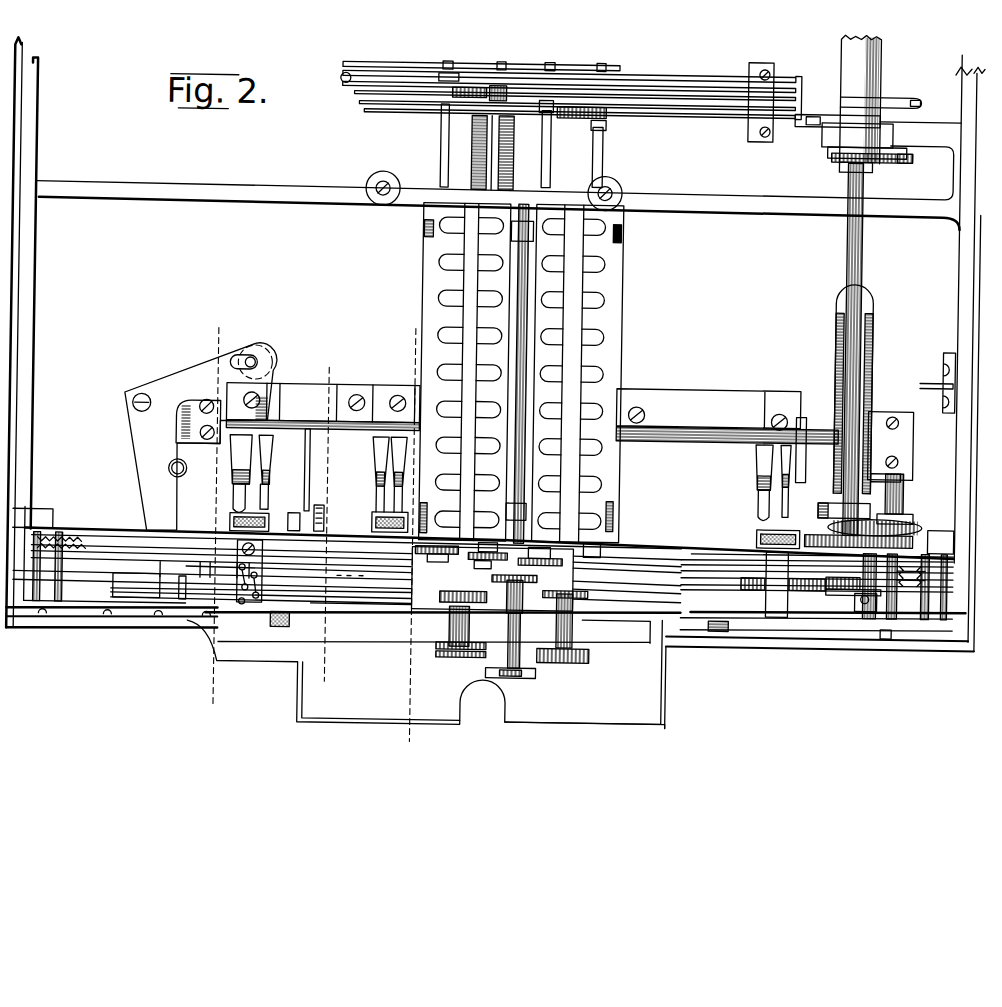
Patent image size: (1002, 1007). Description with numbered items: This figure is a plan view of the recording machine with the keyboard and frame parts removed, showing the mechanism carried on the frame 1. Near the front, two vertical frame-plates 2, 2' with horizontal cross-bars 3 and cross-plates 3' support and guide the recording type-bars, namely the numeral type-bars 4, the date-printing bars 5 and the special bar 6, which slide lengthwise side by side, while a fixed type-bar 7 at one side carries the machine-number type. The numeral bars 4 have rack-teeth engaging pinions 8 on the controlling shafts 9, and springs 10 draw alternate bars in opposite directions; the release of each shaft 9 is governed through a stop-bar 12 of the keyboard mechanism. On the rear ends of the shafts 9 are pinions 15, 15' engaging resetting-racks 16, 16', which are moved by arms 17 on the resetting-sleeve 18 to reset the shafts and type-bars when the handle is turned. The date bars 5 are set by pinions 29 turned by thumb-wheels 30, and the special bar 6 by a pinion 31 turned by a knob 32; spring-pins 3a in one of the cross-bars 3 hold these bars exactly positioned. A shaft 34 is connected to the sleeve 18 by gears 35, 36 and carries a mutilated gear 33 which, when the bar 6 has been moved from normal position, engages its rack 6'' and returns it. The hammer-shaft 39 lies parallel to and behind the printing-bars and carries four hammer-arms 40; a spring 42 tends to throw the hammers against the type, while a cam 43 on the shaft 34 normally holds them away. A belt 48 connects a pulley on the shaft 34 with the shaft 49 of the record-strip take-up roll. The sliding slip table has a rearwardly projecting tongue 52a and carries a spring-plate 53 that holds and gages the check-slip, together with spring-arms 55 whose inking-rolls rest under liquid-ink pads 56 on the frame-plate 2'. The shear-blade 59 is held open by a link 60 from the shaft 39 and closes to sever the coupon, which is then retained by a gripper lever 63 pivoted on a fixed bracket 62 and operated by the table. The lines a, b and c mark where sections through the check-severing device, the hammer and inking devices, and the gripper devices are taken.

The frame 1 is at (495, 385).
The frame-plate 2 is at (486, 592).
The frame-plate 2' is at (822, 537).
The cross-bars 3 is at (503, 605).
The cross-plates 3' is at (400, 633).
The snap-detents or spring-pins 3a is at (249, 573).
The numeral type-bars 4 is at (207, 548).
The date-printing bars 5 is at (371, 581).
The special bar 6 is at (298, 569).
The rack 6'' is at (842, 629).
The fixed type-bar 7 is at (392, 603).
The pinions 8 is at (446, 552).
The operating or controlling shafts 9 is at (543, 157).
The springs 10 is at (83, 539).
The stop-bar 12 is at (434, 302).
The pinions 15 is at (472, 70).
The worm 15' is at (580, 124).
The resetting-racks 16 is at (569, 77).
The guide bar support 16' is at (580, 100).
The arms 17 is at (833, 105).
The resetting-sleeve 18 is at (879, 61).
The pinions 29 is at (457, 595).
The handles or thumb-wheels 30 is at (486, 645).
The pinion 31 is at (538, 580).
The handle or knob 32 is at (524, 676).
The mutilated gear 33 is at (885, 580).
The shaft 34 is at (866, 258).
The gear 35 is at (878, 150).
The gear 36 is at (914, 150).
The hammer-shaft 39 is at (828, 414).
The hammer-arms 40 is at (272, 471).
The spring 42 is at (879, 398).
The cam 43 is at (835, 492).
The belt 48 is at (912, 510).
The shaft 49 is at (912, 487).
The tongue 52a is at (472, 143).
The spring-plate 53 is at (650, 638).
The spring-arms 55 is at (255, 451).
The pads 56 is at (248, 516).
The shear-blade 59 is at (308, 522).
The link or bar 60 is at (312, 471).
The fixed bracket 62 is at (192, 427).
The lever 63 is at (152, 453).
The section line a is at (328, 520).
The section line b is at (407, 543).
The section line c is at (218, 514).